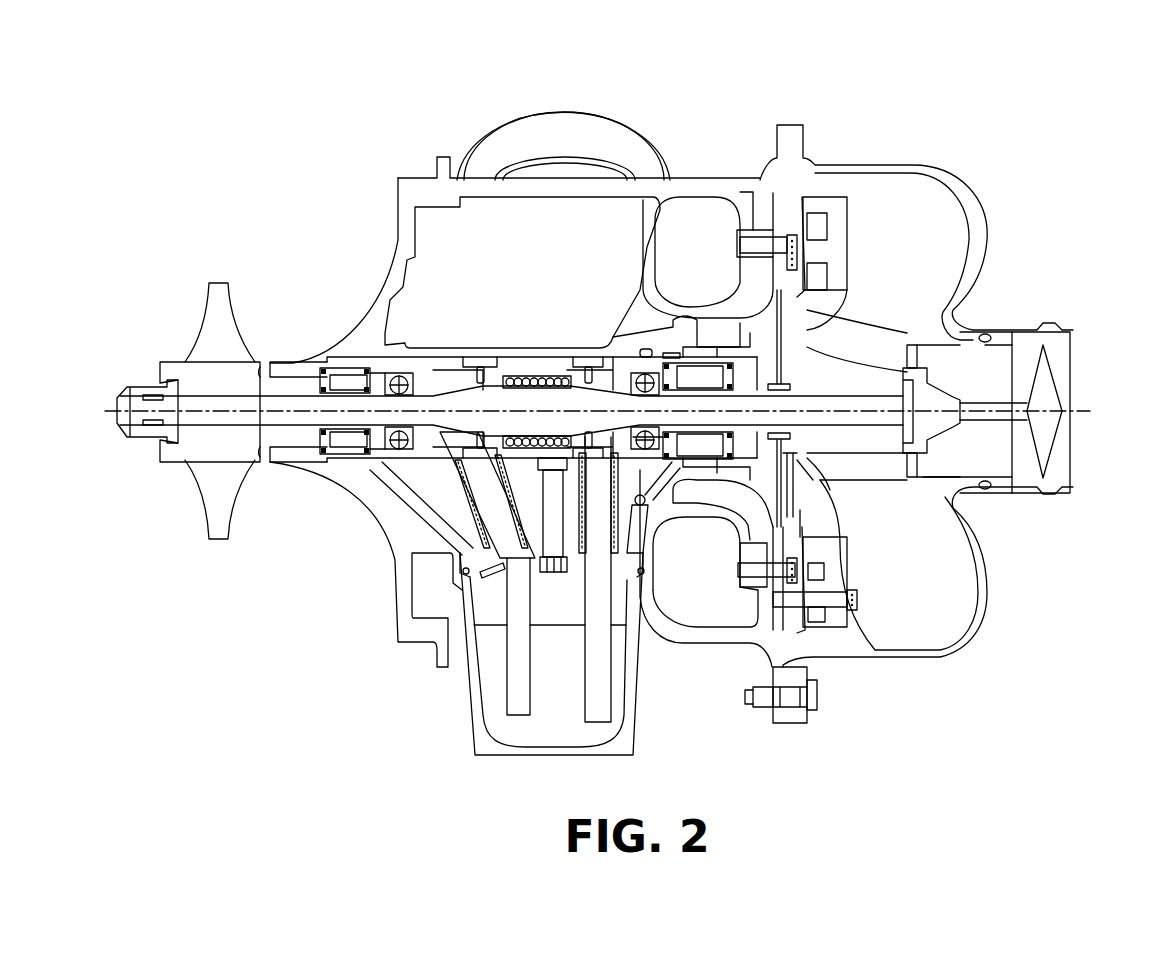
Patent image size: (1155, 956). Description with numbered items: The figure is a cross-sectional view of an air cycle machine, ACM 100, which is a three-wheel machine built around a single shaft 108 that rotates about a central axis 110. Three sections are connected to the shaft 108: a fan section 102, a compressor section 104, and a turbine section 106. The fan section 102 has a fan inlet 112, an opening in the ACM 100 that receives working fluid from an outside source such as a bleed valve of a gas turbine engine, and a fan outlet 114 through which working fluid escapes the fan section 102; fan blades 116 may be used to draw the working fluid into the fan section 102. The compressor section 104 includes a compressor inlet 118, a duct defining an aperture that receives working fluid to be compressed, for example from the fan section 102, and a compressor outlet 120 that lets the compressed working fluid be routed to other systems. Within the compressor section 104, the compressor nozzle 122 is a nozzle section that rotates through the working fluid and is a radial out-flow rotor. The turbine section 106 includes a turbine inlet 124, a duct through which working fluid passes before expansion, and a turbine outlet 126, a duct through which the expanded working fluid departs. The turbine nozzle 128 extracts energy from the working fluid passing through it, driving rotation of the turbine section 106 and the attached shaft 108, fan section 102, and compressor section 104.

The ACM 100 is at (216, 243).
The fan section 102 is at (1051, 283).
The compressor section 104 is at (846, 132).
The turbine section 106 is at (661, 122).
The shaft 108 is at (440, 418).
The central axis 110 is at (1085, 412).
The fan inlet 112 is at (1082, 360).
The fan outlet 114 is at (927, 477).
The fan blades 116 is at (1043, 437).
The compressor inlet 118 is at (930, 355).
The compressor outlet 120 is at (797, 277).
The compressor nozzle 122 is at (883, 347).
The turbine inlet 124 is at (712, 587).
The turbine outlet 126 is at (637, 320).
The turbine nozzle 128 is at (747, 330).